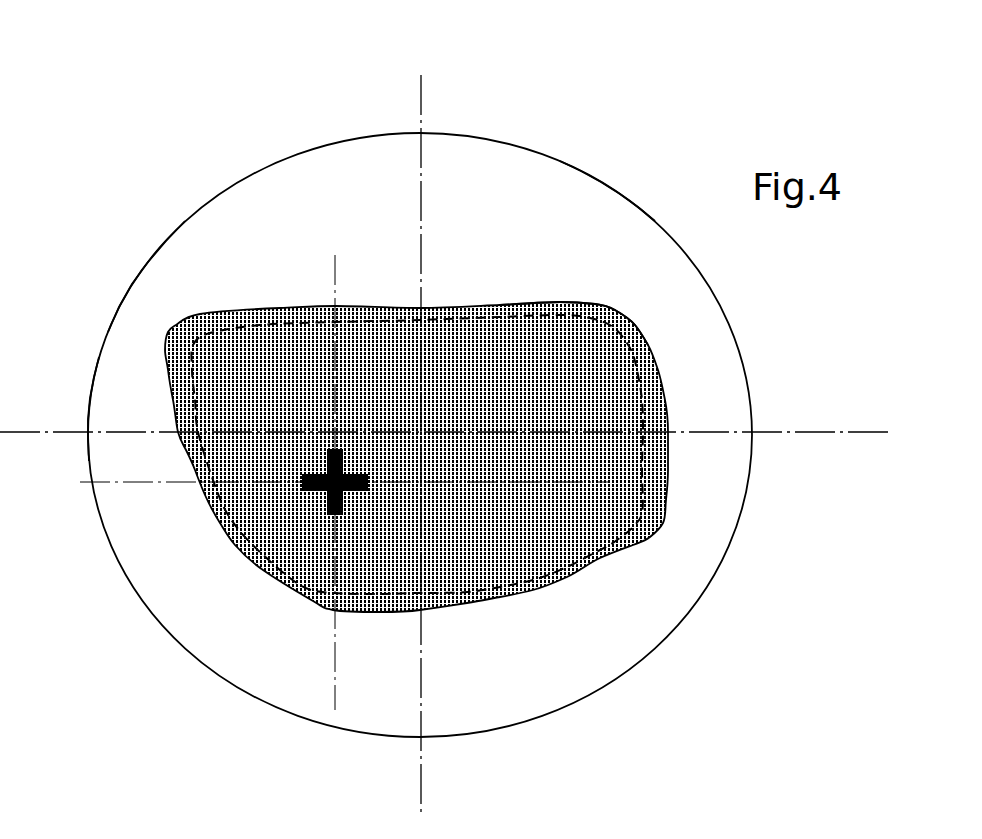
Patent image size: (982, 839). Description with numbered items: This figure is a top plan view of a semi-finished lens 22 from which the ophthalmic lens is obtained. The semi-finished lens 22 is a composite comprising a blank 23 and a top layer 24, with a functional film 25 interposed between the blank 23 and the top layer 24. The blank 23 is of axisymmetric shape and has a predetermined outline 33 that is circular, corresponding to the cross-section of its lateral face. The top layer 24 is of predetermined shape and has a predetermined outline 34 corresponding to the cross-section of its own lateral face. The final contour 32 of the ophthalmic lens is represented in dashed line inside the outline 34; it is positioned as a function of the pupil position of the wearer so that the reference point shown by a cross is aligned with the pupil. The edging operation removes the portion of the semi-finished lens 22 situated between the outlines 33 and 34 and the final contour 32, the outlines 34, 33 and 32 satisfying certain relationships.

The semi-finished lens 22 is at (176, 76).
The blank 23 is at (137, 272).
The top layer 24 is at (165, 350).
The functional film 25 is at (98, 408).
The final contour 32 is at (633, 378).
The outline of the blank 33 is at (607, 185).
The outline of the top layer 34 is at (593, 300).